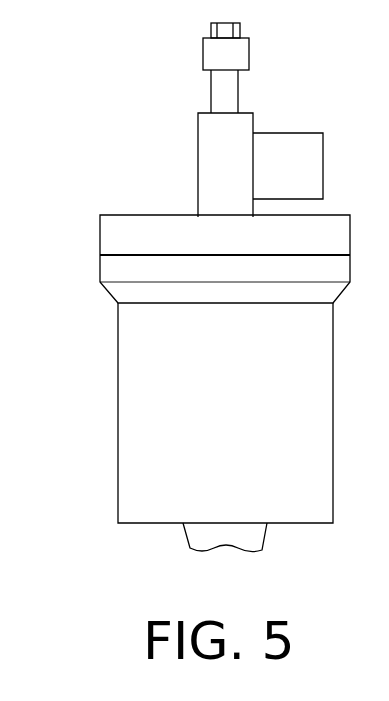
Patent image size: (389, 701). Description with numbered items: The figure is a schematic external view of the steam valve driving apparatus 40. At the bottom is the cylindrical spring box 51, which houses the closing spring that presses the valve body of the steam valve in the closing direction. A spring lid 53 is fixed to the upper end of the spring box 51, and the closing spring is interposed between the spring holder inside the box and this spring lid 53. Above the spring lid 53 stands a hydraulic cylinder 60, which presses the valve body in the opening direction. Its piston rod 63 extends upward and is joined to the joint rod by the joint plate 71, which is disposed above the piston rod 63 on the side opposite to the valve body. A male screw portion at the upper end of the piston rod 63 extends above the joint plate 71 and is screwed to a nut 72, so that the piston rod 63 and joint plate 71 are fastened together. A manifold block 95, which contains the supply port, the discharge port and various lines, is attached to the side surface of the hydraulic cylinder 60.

The steam valve driving apparatus 40 is at (80, 145).
The spring box 51 is at (130, 413).
The spring lid 53 is at (108, 233).
The hydraulic cylinder 60 is at (210, 160).
The piston rod 63 is at (219, 88).
The joint plate 71 is at (241, 52).
The nut 72 is at (211, 30).
The manifold block 95 is at (291, 142).